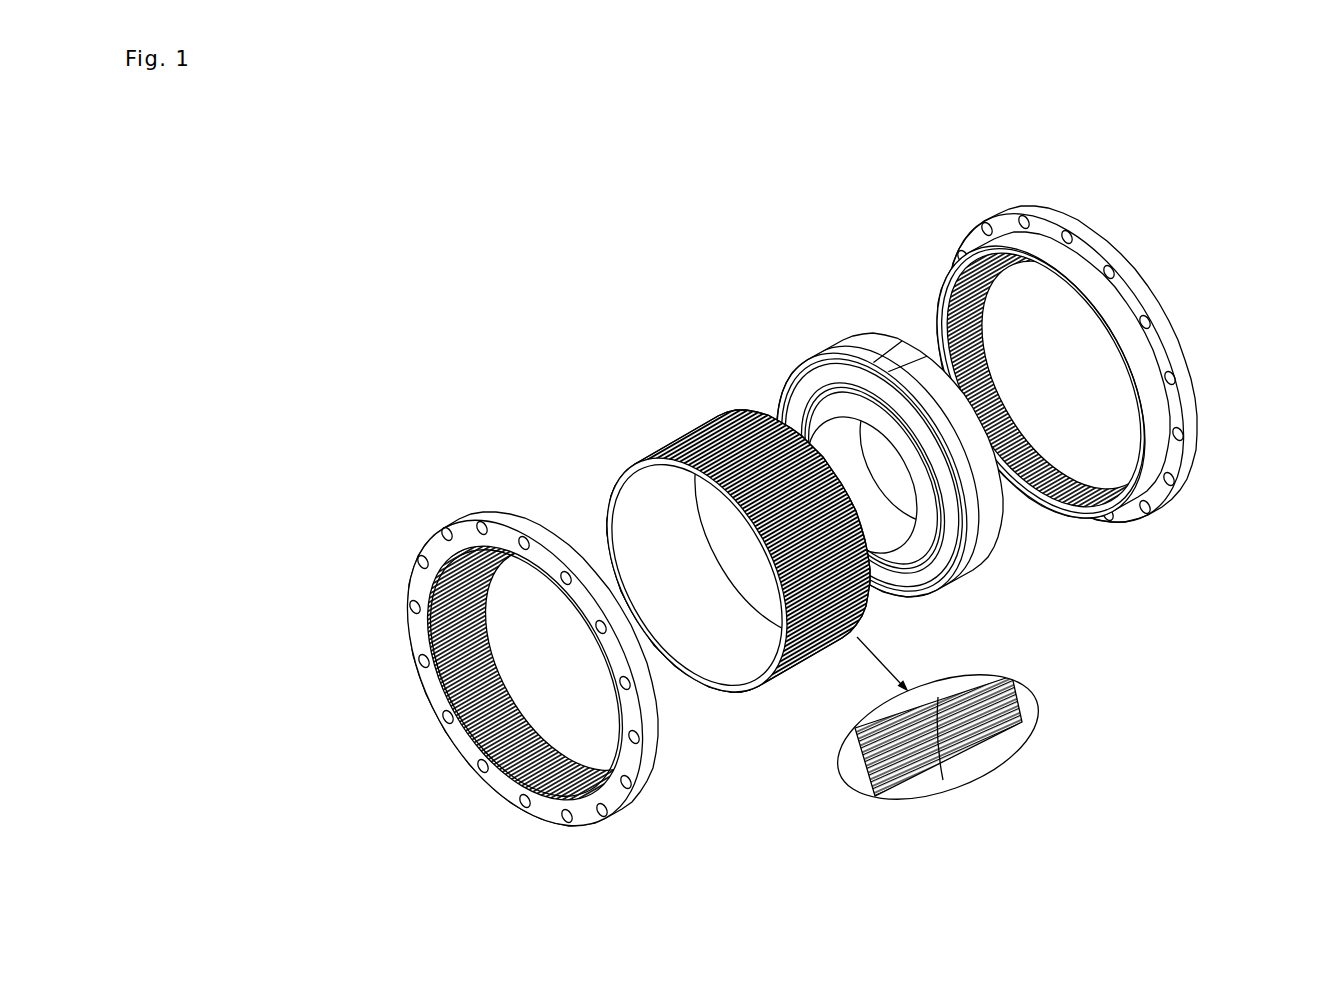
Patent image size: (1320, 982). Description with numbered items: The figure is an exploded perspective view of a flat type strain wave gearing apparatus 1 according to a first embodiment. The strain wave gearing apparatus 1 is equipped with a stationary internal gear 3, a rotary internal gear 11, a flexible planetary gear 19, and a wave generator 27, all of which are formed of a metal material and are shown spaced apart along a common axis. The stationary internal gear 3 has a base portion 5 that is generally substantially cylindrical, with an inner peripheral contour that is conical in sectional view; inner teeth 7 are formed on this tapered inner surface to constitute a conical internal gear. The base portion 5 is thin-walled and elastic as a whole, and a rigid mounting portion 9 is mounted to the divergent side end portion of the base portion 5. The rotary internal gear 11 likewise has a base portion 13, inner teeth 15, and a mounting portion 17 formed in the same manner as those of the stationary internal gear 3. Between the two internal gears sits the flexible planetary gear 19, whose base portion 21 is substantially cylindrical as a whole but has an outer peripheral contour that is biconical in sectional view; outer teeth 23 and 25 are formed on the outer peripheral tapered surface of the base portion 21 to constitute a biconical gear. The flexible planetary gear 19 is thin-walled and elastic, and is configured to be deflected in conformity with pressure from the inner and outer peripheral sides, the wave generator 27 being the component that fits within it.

The strain wave gearing apparatus 1 is at (967, 189).
The stationary internal gear 3 is at (1074, 349).
The base portion 5 is at (1068, 272).
The inner teeth 7 is at (1035, 465).
The mounting portion 9 is at (1178, 459).
The rotary internal gear 11 is at (494, 674).
The base portion 13 is at (578, 553).
The inner teeth 15 is at (505, 730).
The mounting portion 17 is at (551, 812).
The flexible planetary gear 19 is at (735, 589).
The base portion 21 is at (752, 668).
The outer teeth 23 is at (950, 741).
The outer teeth 25 is at (870, 770).
The wave generator 27 is at (1008, 574).